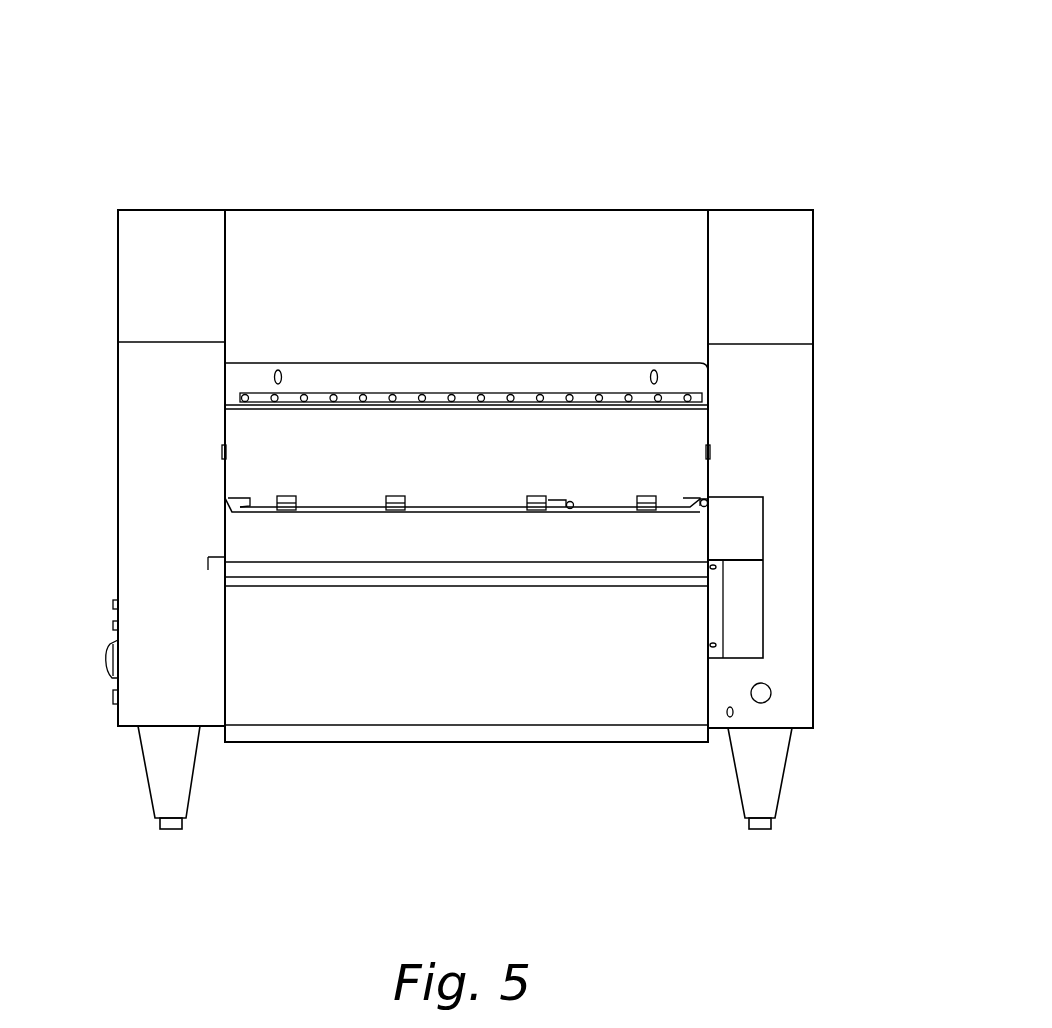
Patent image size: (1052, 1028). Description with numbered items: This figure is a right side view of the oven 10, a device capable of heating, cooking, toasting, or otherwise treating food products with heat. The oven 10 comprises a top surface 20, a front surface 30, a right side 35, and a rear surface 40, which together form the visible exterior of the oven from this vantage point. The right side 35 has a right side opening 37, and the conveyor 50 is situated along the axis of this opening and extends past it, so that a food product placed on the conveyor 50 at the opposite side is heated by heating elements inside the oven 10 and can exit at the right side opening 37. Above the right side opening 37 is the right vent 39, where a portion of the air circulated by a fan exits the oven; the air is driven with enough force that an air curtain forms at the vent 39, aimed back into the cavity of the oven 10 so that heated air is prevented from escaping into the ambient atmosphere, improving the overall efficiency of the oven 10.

The oven 10 is at (192, 68).
The top surface 20 is at (498, 245).
The front surface 30 is at (160, 472).
The rear surface 40 is at (815, 262).
The right side 35 is at (770, 467).
The right vent 39 is at (640, 408).
The right side opening 37 is at (585, 452).
The conveyor 50 is at (640, 538).